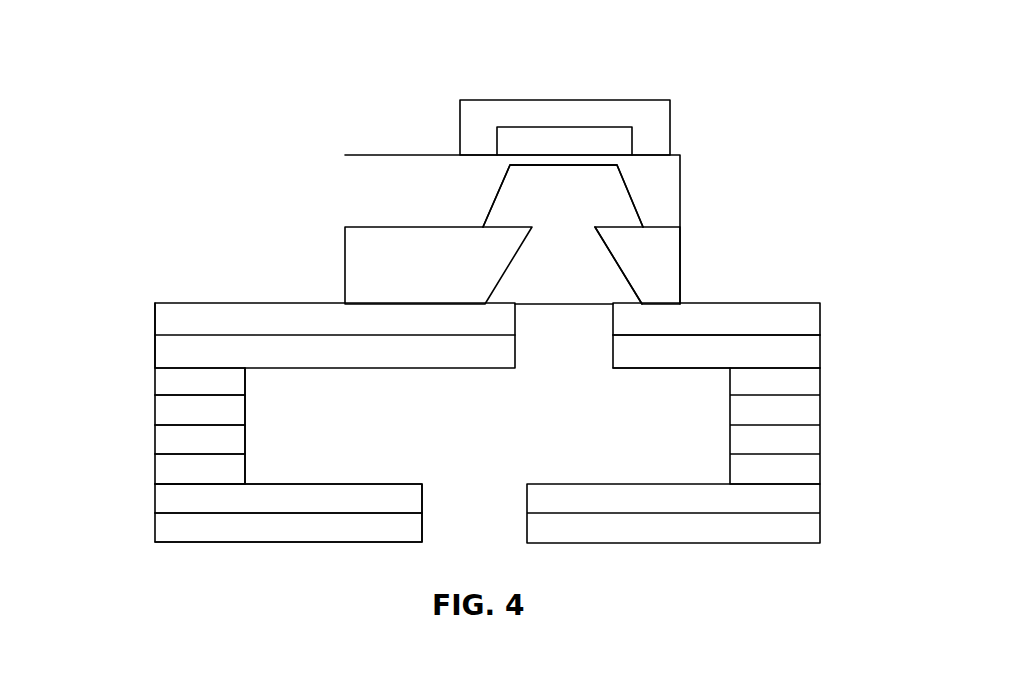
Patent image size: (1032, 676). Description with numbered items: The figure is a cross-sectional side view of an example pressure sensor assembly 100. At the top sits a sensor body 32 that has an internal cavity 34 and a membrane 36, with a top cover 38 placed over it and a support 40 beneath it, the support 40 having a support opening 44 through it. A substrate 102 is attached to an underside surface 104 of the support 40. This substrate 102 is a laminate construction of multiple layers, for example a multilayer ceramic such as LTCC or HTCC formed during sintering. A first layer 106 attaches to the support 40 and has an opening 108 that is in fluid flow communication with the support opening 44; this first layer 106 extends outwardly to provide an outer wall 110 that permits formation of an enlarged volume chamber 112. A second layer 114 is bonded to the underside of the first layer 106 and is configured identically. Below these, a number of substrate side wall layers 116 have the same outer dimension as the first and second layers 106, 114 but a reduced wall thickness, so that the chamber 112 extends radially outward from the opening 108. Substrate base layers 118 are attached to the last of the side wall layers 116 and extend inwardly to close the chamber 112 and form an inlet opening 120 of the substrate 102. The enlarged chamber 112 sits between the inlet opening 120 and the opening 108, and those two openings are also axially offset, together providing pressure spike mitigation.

The pressure sensor assembly 100 is at (752, 122).
The substrate 102 is at (150, 375).
The underside surface 104 is at (378, 305).
The first layer 106 is at (805, 315).
The opening 108 is at (590, 316).
The outer wall 110 is at (820, 336).
The chamber 112 is at (308, 428).
The second layer 114 is at (810, 346).
The substrate side wall layers 116 is at (830, 368).
The substrate base layers 118 is at (830, 484).
The inlet opening 120 is at (450, 535).
The sensor body 32 is at (346, 192).
The internal cavity 34 is at (610, 207).
The membrane 36 is at (541, 167).
The top cover 38 is at (646, 108).
The support 40 is at (683, 253).
The support opening 44 is at (590, 260).